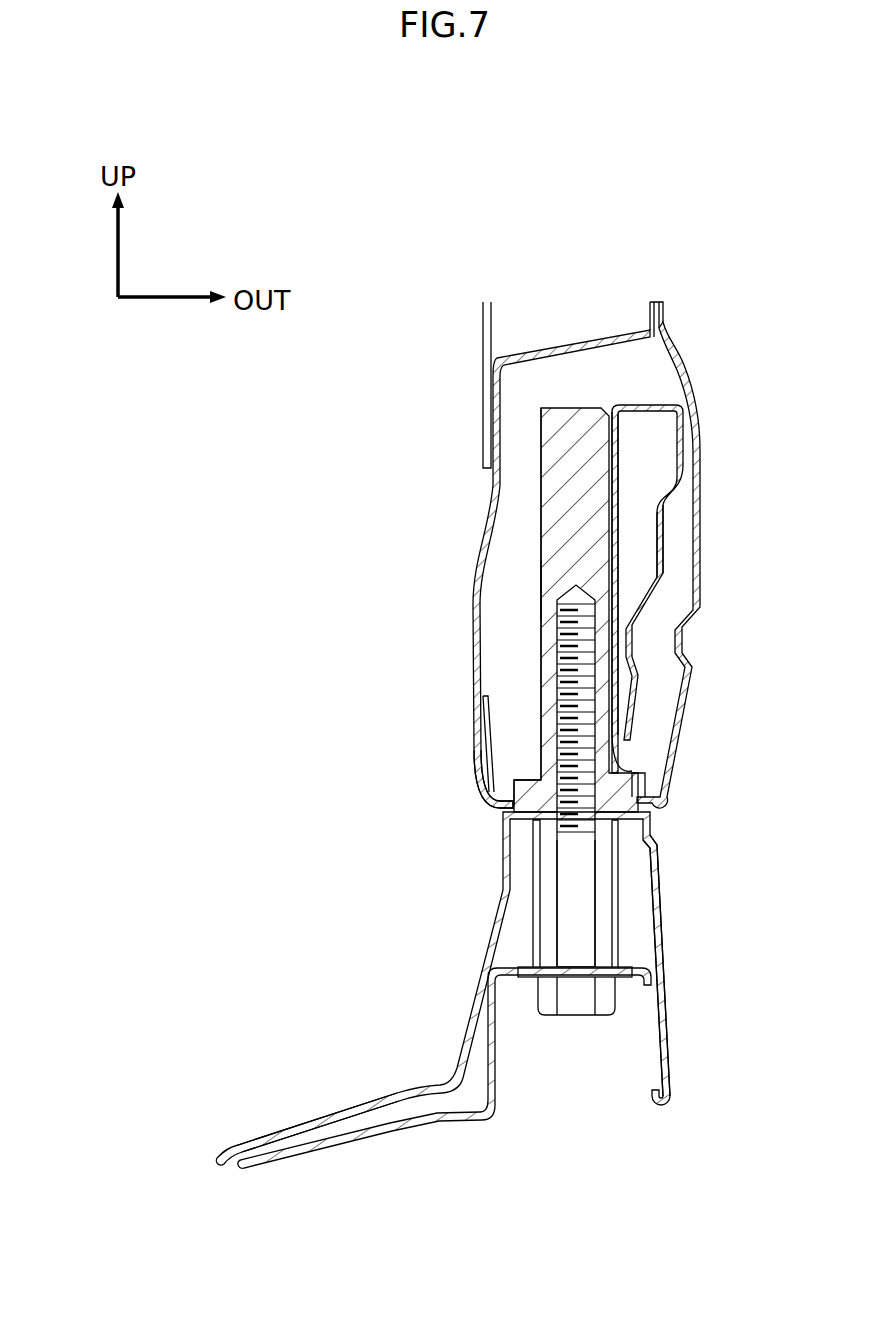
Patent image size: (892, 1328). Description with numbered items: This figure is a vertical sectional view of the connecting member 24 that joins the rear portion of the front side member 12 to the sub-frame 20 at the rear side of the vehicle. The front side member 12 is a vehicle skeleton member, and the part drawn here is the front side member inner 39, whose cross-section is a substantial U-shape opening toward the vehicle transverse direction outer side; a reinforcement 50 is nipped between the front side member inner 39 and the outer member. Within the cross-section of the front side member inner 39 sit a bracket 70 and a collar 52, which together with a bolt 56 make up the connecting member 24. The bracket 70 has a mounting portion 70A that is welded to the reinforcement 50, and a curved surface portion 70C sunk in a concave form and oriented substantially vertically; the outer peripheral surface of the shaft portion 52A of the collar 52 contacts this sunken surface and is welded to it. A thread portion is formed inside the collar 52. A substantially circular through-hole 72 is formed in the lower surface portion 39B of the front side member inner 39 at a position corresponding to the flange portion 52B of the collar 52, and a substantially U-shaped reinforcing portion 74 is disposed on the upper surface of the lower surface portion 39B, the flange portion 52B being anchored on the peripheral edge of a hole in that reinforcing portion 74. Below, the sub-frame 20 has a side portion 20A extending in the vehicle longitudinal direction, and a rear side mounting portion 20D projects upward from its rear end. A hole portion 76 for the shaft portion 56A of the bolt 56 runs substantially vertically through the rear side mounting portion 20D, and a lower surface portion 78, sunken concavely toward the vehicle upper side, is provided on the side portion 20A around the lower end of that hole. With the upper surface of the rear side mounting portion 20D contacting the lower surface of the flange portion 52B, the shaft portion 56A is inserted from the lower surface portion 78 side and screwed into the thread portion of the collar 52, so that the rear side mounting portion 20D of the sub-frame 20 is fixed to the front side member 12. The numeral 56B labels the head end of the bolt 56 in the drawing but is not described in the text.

The front side member 12 is at (614, 308).
The front side member inner 39 is at (556, 336).
The lower surface portion 39B is at (506, 808).
The reinforcement 50 is at (712, 484).
The bracket 70 is at (652, 392).
The curved surface portion 70C is at (621, 498).
The mounting portion 70A is at (664, 542).
The collar 52 is at (532, 498).
The shaft portion 52A is at (548, 528).
The connecting member 24 is at (527, 590).
The flange portion 52B is at (530, 782).
The reinforcing portion 74 is at (491, 739).
The through-hole 72 is at (636, 776).
The bolt 56 is at (630, 860).
The shaft portion 56A is at (585, 913).
The nut 56B is at (600, 1018).
The hole portion 76 is at (548, 876).
The sub-frame 20 is at (345, 1104).
The side portion 20A is at (305, 1133).
The rear side mounting portion 20D is at (659, 885).
The lower surface portion 78 is at (513, 977).